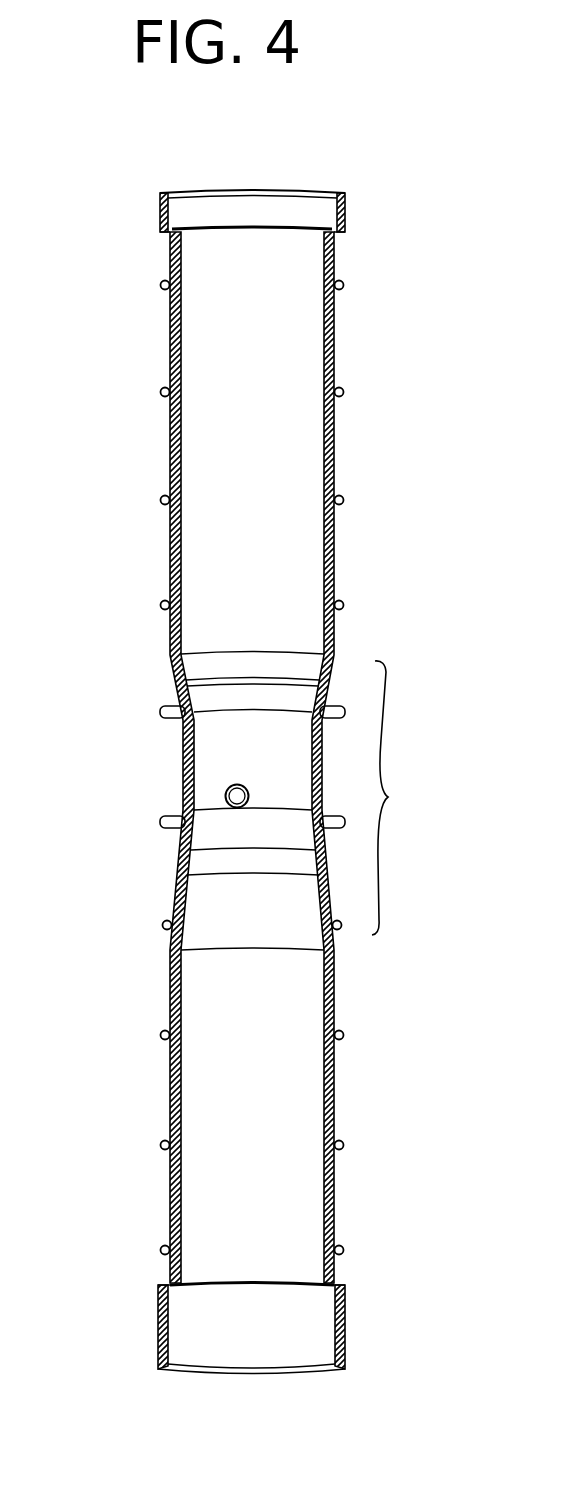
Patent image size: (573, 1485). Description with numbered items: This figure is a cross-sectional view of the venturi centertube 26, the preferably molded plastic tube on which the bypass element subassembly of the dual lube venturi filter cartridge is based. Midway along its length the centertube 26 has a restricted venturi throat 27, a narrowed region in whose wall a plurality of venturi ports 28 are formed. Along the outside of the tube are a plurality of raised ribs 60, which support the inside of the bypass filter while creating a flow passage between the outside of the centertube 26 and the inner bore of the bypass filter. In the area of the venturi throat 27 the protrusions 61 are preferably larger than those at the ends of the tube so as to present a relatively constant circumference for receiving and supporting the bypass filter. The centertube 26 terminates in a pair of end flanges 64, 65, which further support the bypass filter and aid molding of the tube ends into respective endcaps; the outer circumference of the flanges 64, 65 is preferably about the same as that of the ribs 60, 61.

The venturi centertube 26 is at (336, 442).
The restricted venturi throat 27 is at (388, 797).
The venturi ports 28 is at (228, 789).
The raised ribs 60 is at (161, 393).
The protrusions 61 is at (160, 712).
The end flange 64 is at (346, 205).
The end flange 65 is at (346, 1322).